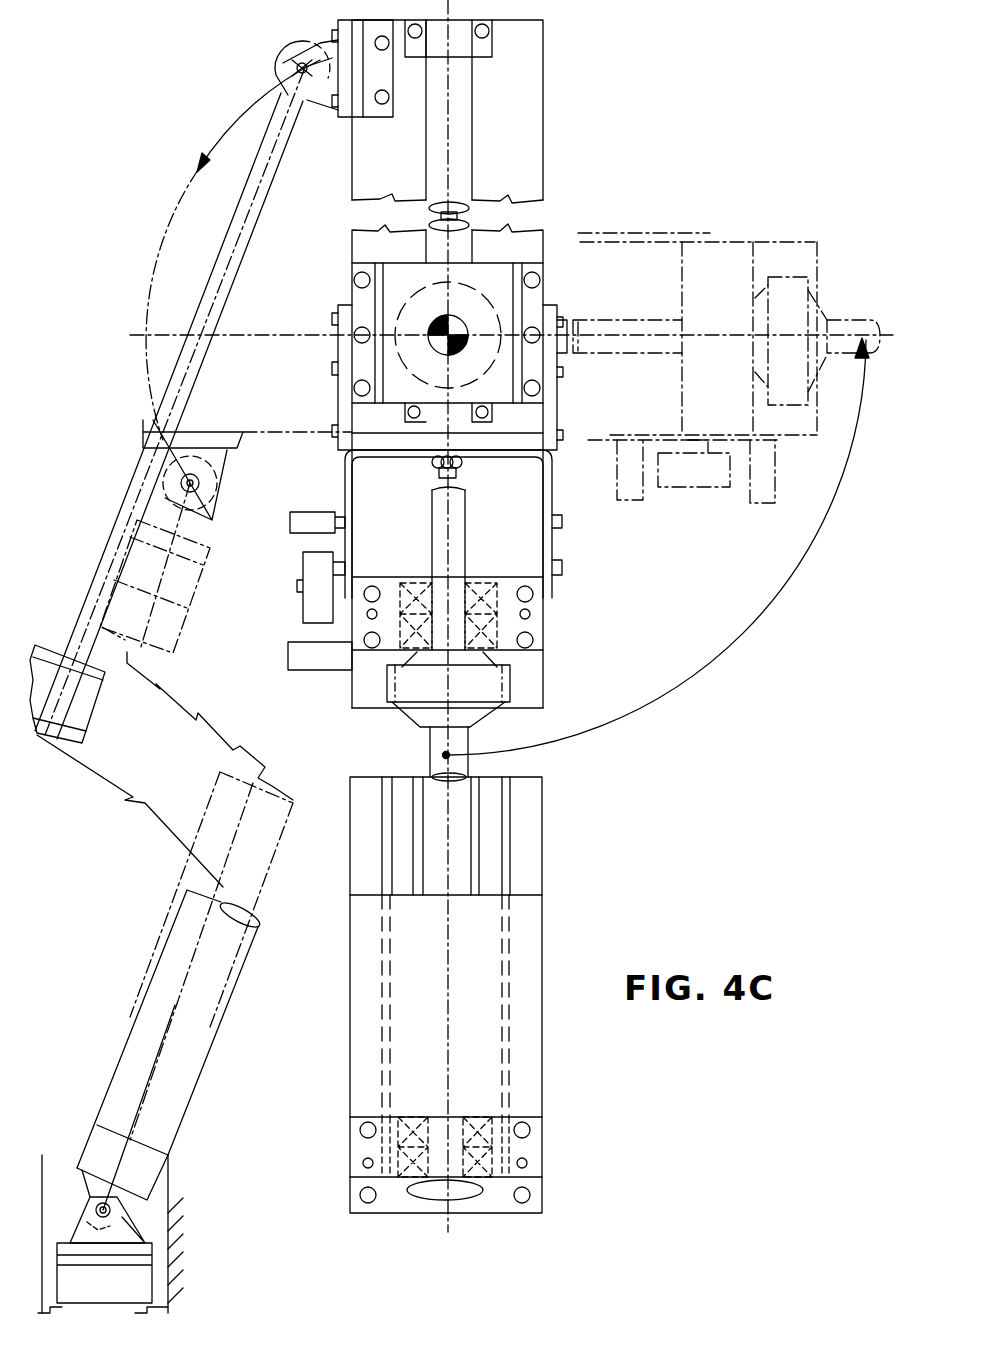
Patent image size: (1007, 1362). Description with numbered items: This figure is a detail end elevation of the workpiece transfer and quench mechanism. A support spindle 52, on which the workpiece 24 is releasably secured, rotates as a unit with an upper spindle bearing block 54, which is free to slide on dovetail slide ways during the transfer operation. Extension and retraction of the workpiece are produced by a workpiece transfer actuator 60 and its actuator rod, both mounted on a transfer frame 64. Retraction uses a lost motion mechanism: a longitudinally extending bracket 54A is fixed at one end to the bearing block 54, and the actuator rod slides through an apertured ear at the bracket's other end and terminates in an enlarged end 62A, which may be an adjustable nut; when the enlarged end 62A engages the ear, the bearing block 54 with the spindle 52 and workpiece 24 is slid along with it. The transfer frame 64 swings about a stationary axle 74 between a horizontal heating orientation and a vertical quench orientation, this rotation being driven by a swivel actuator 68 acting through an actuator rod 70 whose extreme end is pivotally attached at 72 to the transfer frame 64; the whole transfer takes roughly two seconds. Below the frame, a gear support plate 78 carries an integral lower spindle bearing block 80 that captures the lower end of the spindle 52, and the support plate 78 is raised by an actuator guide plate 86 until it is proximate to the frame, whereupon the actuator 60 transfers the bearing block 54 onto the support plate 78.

The workpiece 24 is at (507, 687).
The support spindle 52 is at (458, 541).
The upper spindle bearing block 54 is at (510, 628).
The bracket 54A is at (358, 498).
The workpiece transfer actuator 60 is at (457, 107).
The enlarged end 62A is at (462, 463).
The transfer frame 64 is at (520, 155).
The swivel actuator 68 is at (193, 1048).
The actuator rod 70 is at (142, 472).
The pivotal attachment 72 is at (295, 64).
The stationary axle 74 is at (452, 334).
The gear support plate 78 is at (523, 955).
The lower spindle bearing block 80 is at (517, 1153).
The actuator guide plate 86 is at (522, 843).